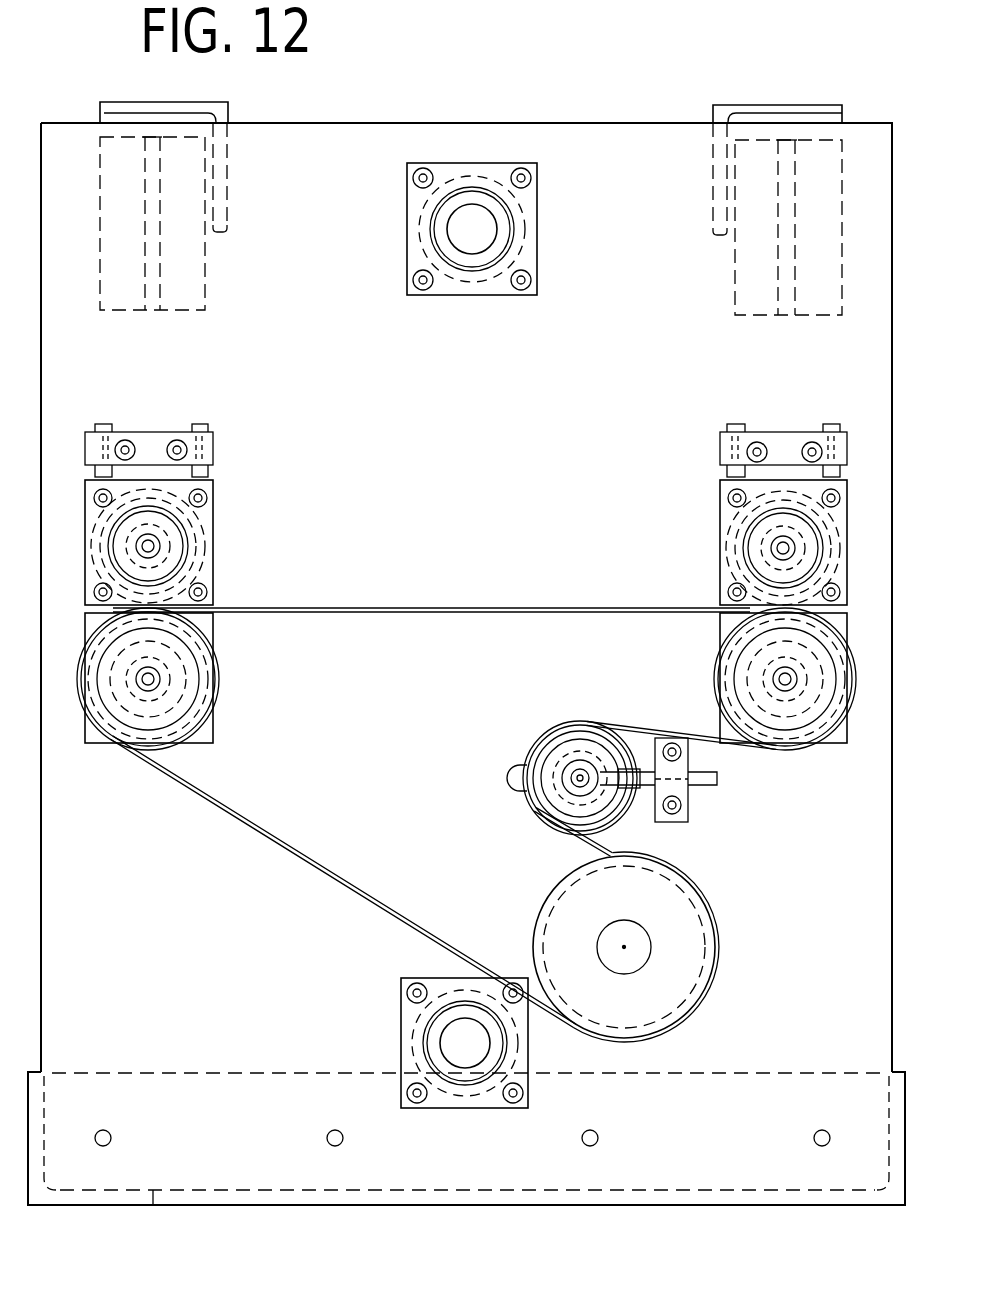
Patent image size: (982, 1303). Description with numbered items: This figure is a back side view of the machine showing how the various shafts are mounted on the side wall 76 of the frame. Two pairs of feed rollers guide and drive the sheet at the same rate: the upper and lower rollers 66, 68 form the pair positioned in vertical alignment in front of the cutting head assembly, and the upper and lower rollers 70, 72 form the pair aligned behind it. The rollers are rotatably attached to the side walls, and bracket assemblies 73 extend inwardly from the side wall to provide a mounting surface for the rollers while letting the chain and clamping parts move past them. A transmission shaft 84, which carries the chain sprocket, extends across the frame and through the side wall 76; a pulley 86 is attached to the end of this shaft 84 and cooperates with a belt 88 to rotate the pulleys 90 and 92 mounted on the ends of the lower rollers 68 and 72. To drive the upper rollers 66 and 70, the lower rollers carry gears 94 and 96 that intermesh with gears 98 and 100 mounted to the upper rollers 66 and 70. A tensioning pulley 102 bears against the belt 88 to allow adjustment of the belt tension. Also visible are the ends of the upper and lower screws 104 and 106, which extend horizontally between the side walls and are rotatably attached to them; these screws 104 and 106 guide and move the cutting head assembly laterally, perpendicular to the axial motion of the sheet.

The side wall 76 is at (503, 123).
The bracket assembly 73 is at (163, 273).
The upper screw 104 is at (525, 214).
The lower screw 106 is at (400, 1024).
The gear 100 is at (210, 547).
The upper feed roller 70 is at (205, 527).
The gear 96 is at (205, 640).
The pulley 90 is at (222, 670).
The lower feed roller 72 is at (200, 712).
The gear 98 is at (725, 555).
The upper feed roller 66 is at (733, 525).
The lower feed roller 68 is at (733, 655).
The pulley 92 is at (718, 672).
The gear 94 is at (720, 706).
The pulley 86 is at (707, 993).
The transmission shaft 84 is at (650, 930).
The tensioning pulley 102 is at (623, 817).
The belt 88 is at (333, 866).